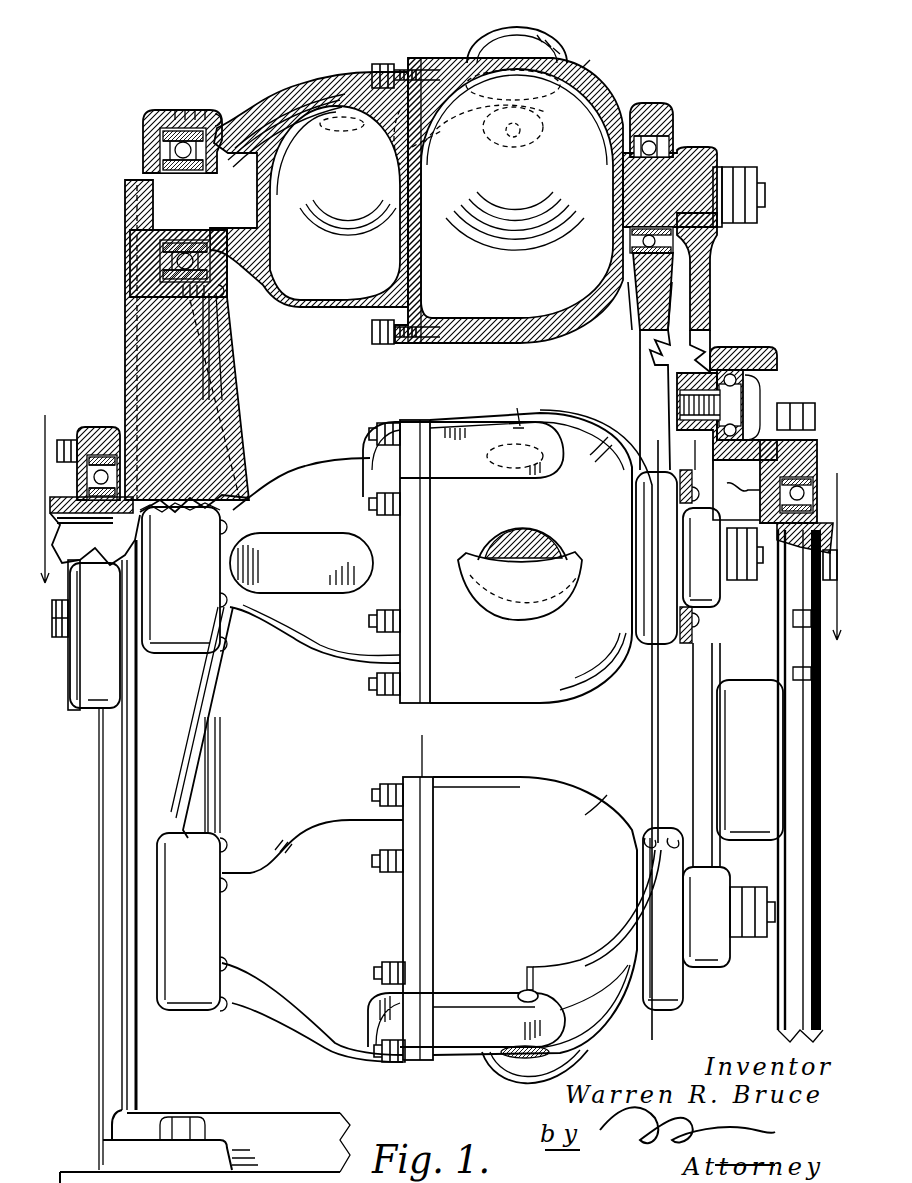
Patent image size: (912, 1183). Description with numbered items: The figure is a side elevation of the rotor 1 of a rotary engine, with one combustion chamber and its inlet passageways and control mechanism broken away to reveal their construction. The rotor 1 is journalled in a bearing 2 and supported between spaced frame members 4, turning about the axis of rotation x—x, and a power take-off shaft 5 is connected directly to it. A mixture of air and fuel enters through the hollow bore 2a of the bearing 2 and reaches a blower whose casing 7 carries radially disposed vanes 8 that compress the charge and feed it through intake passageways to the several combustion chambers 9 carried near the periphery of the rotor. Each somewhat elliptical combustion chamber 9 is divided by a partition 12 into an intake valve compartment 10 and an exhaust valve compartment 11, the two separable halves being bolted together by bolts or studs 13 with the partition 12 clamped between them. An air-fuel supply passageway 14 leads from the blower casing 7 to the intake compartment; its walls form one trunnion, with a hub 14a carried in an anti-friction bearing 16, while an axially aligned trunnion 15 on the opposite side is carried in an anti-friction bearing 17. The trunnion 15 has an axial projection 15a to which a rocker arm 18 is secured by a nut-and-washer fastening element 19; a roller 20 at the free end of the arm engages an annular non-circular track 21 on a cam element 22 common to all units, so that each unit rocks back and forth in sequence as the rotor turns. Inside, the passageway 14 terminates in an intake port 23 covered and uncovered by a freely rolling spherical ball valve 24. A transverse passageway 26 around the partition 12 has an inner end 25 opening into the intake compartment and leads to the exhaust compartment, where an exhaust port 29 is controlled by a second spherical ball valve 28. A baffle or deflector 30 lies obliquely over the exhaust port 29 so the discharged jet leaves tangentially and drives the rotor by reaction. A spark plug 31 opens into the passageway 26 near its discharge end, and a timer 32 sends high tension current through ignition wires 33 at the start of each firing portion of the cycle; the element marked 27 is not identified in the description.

The rotor 1 is at (668, 332).
The bearing 2 is at (90, 428).
The hollow bore 2a is at (73, 637).
The frame members 4 is at (118, 1060).
The power take-off shaft 5 is at (832, 582).
The blower casing 7 is at (128, 368).
The vanes 8 is at (215, 456).
The combustion chamber 9 is at (327, 65).
The intake valve compartment 10 is at (304, 270).
The exhaust valve compartment 11 is at (575, 312).
The partition 12 is at (425, 335).
The bolts or studs 13 is at (380, 64).
The air-fuel supply passageway 14 is at (264, 128).
The hub 14a is at (162, 140).
The trunnion 15 is at (680, 172).
The axial projection 15a is at (722, 160).
The anti-friction bearing 16 is at (180, 240).
The anti-friction bearing 17 is at (655, 135).
The rocker arm 18 is at (700, 292).
The nut-and-washer fastening element 19 is at (742, 195).
The roller 20 is at (740, 346).
The annular non-circular track 21 is at (770, 355).
The cam element 22 is at (750, 822).
The intake port 23 is at (345, 118).
The spherical ball valve 24 is at (388, 212).
The inner end of transverse passageway 25 is at (402, 110).
The transverse passageway 26 is at (441, 148).
The passage 27 is at (525, 120).
The spherical ball valve 28 is at (560, 205).
The exhaust port 29 is at (490, 1082).
The baffle or deflector 30 is at (540, 42).
The spark plug 31 is at (517, 420).
The timer 32 is at (648, 645).
The ignition wires 33 is at (566, 414).
The axis of rotation x is at (442, 526).